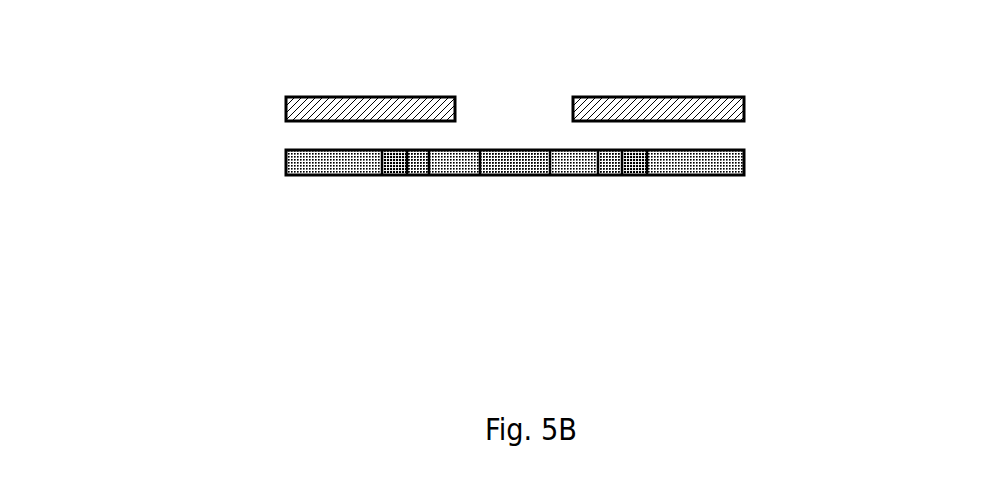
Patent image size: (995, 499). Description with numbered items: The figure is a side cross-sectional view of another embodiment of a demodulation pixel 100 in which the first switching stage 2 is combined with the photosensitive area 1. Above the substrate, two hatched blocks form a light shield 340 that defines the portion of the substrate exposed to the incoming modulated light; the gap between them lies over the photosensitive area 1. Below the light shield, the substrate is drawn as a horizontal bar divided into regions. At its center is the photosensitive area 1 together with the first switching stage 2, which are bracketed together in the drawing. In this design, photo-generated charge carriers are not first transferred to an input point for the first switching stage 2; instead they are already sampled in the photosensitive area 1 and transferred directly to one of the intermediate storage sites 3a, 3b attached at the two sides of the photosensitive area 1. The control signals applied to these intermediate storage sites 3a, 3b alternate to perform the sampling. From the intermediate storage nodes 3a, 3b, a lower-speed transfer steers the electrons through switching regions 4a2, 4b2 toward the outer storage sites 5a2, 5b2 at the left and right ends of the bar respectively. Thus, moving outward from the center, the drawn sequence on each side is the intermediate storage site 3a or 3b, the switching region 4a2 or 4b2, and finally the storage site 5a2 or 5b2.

The demodulation pixel 100 is at (508, 172).
The light shield 340 is at (286, 111).
The storage site 5a2 is at (333, 177).
The left dark pixel region 4a2 is at (393, 177).
The intermediate storage site 3a is at (418, 177).
The photosensitive area 1 is at (513, 194).
The first switching stage 2 is at (597, 184).
The intermediate storage site 3b is at (612, 177).
The right dark pixel region 4b2 is at (637, 177).
The storage site 5b2 is at (697, 190).